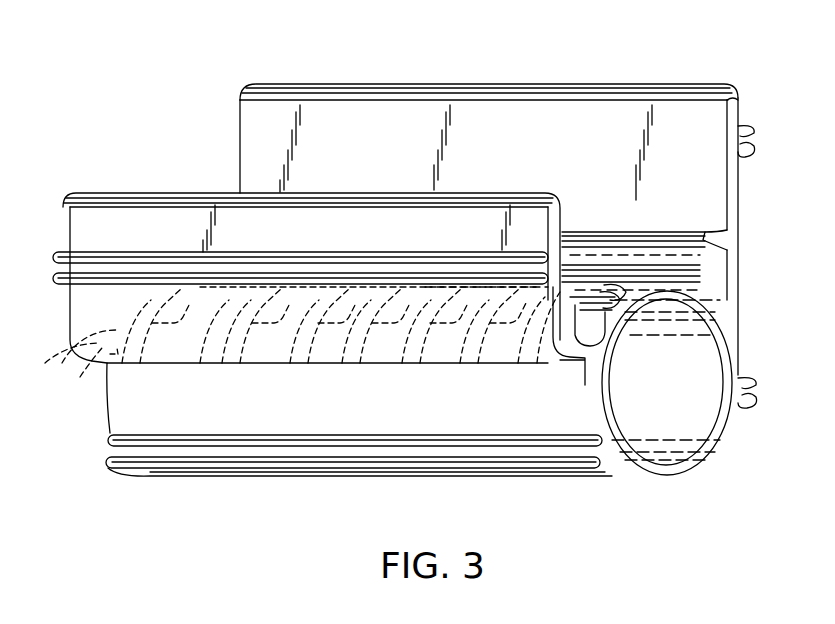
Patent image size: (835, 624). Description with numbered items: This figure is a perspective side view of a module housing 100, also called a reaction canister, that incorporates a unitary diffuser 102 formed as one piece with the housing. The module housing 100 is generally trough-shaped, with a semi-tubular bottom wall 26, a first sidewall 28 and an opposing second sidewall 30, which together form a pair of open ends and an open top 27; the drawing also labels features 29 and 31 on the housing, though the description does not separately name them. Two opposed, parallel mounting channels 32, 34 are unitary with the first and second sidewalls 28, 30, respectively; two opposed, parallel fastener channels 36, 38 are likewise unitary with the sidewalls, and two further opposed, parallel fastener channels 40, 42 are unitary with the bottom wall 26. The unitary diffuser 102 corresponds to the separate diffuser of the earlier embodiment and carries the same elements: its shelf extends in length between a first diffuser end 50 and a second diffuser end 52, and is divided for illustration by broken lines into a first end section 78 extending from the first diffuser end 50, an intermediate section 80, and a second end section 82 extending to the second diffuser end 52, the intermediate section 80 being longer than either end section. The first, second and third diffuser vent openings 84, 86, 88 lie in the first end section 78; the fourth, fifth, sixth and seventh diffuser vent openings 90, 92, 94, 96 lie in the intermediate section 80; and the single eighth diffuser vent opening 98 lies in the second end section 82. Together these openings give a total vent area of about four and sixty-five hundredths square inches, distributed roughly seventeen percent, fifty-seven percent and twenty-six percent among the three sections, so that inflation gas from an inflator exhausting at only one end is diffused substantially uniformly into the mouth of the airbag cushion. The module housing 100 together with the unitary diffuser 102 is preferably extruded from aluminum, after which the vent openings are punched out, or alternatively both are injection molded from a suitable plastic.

The module housing 100 is at (476, 55).
The open top 27 is at (605, 82).
The glass pane 29 is at (388, 201).
The upper frame corner 31 is at (743, 90).
The second sidewall 30 is at (736, 206).
The fastener channel 38 is at (752, 150).
The fastener channel 42 is at (748, 404).
The mounting channel 34 is at (730, 241).
The unitary diffuser 102 is at (703, 305).
The first diffuser end 50 is at (716, 355).
The fastener channel 36 is at (348, 246).
The first sidewall 28 is at (72, 304).
The semi-tubular bottom wall 26 is at (566, 476).
The fastener channel 40 is at (476, 467).
The mounting channel 32 is at (576, 362).
The first diffuser vent opening 84 is at (612, 296).
The first end section 78 is at (655, 290).
The second diffuser vent opening 86 is at (537, 363).
The third diffuser vent opening 88 is at (493, 325).
The fourth diffuser vent opening 90 is at (420, 364).
The fifth diffuser vent opening 92 is at (360, 364).
The sixth diffuser vent opening 94 is at (307, 364).
The seventh diffuser vent opening 96 is at (238, 364).
The intermediate section 80 is at (198, 366).
The eighth diffuser vent opening 98 is at (138, 364).
The second end section 82 is at (90, 367).
The second diffuser end 52 is at (75, 352).